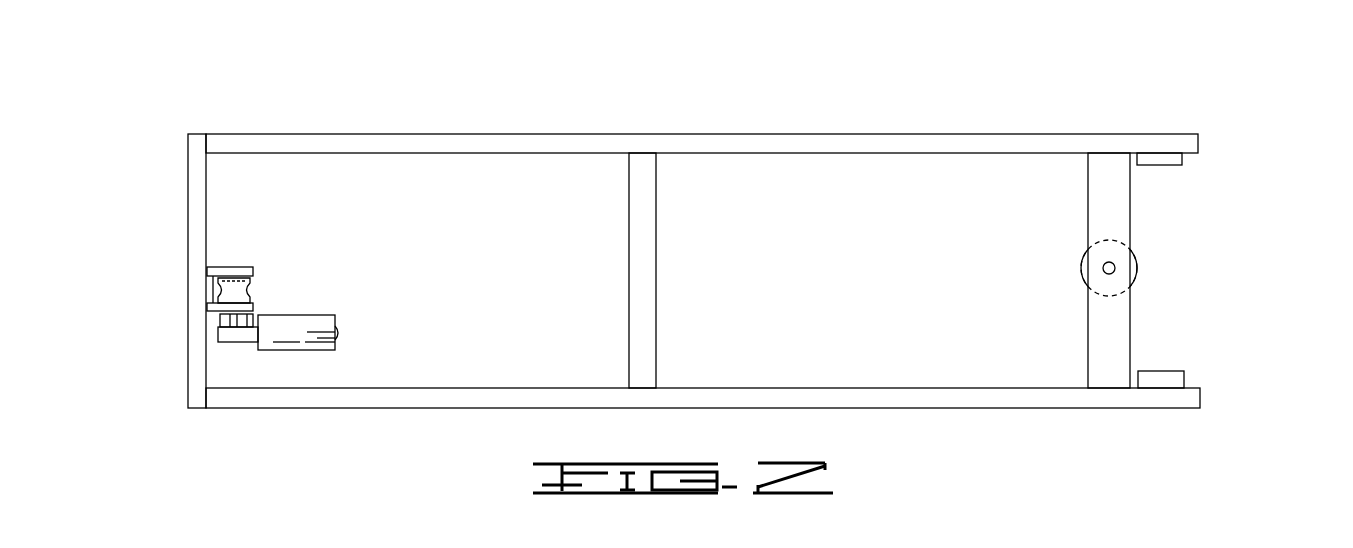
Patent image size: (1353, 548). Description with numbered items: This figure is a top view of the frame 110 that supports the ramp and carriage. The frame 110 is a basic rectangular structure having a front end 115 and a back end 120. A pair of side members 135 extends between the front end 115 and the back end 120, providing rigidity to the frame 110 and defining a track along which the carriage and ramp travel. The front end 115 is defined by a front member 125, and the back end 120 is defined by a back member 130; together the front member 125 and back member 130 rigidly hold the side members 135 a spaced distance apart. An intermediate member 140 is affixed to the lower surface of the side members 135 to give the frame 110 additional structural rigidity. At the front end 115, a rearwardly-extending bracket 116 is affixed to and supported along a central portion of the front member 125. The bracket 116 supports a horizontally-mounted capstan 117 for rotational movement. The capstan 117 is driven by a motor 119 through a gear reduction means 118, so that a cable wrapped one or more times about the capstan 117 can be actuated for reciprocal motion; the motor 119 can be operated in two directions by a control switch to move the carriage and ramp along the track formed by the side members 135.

The frame 110 is at (850, 102).
The front end 115 is at (173, 122).
The bracket 116 is at (240, 267).
The capstan 117 is at (250, 290).
The gear reduction means 118 is at (227, 343).
The motor 119 is at (313, 350).
The back end 120 is at (1207, 113).
The front member 125 is at (188, 330).
The back member 130 is at (1131, 225).
The side members 135 is at (467, 135).
The intermediate member 140 is at (656, 270).